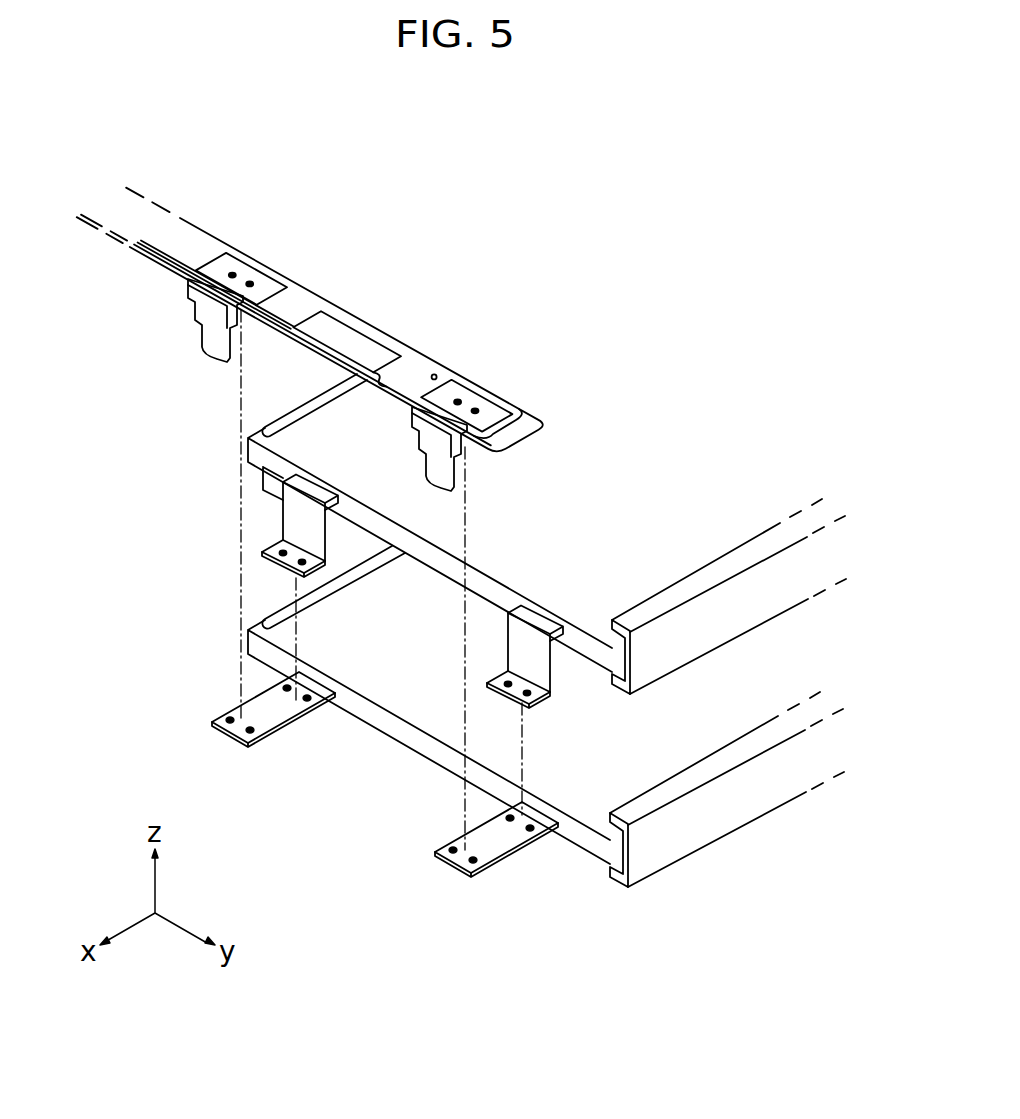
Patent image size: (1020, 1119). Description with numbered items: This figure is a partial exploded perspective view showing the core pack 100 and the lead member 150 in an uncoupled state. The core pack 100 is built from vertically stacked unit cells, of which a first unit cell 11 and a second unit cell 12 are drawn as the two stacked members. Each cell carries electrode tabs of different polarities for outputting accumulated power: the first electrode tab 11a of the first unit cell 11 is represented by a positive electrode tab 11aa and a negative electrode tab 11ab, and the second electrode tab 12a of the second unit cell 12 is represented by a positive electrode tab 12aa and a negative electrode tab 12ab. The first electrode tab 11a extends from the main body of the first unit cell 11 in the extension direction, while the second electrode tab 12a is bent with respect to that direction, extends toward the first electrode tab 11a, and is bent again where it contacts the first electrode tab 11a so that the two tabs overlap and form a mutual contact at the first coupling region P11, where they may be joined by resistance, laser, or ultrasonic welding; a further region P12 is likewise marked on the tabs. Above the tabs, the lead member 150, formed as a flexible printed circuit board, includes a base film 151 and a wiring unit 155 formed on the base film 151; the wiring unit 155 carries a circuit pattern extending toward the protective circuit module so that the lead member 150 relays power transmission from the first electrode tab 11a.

The core pack 100 is at (716, 402).
The first unit cell 11 is at (720, 823).
The second unit cell 12 is at (720, 627).
The first electrode tab 11a is at (385, 807).
The negative electrode tab 11ab is at (259, 747).
The positive electrode tab 11aa is at (491, 873).
The second electrode tab 12a is at (454, 610).
The negative electrode tab 12ab is at (318, 568).
The positive electrode tab 12aa is at (546, 697).
The first coupling region P11 is at (306, 696).
The second fastening hole P12 is at (213, 719).
The lead member 150 is at (607, 412).
The base film 151 is at (542, 428).
The wiring unit 155 is at (523, 396).